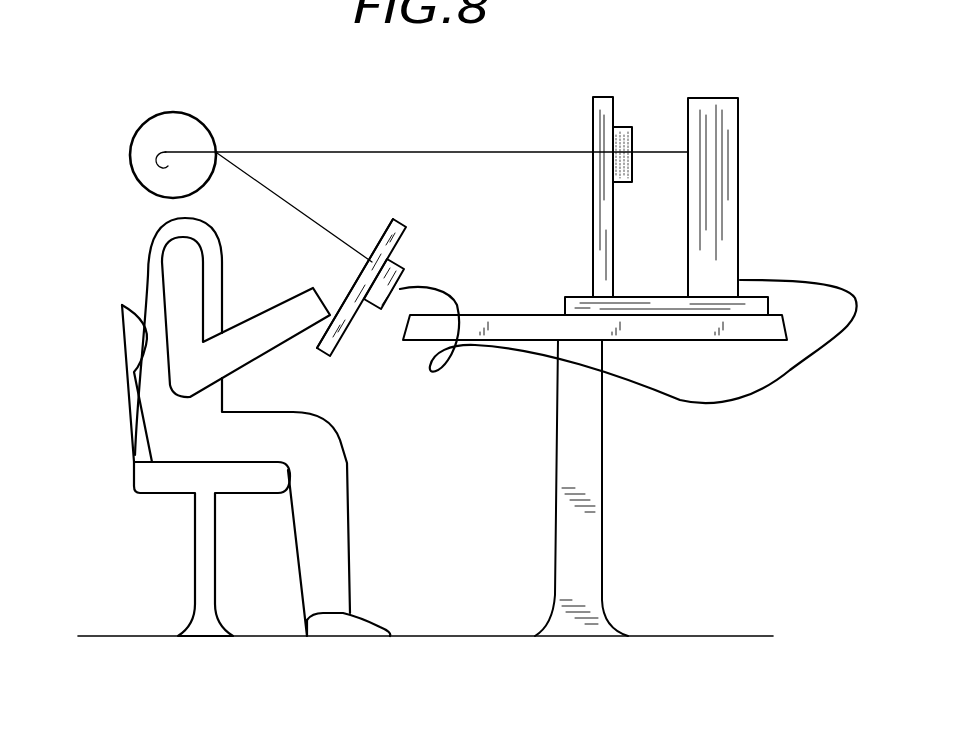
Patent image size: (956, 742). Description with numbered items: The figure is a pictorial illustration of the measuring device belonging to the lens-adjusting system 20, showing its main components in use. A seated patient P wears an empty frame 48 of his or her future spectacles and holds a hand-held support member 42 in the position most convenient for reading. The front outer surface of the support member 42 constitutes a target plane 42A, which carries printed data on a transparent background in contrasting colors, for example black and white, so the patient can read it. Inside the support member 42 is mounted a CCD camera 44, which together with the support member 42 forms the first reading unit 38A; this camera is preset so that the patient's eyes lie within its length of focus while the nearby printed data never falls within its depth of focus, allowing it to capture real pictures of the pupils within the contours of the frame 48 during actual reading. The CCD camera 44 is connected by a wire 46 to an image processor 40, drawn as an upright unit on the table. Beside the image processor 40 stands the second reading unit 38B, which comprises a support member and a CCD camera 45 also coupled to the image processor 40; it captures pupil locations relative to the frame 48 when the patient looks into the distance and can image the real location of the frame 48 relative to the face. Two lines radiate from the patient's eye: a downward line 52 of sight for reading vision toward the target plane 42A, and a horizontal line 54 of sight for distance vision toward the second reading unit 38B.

The patient P is at (85, 209).
The system 20 is at (762, 89).
The first reading unit 38A is at (365, 225).
The second reading unit 38B is at (600, 98).
The image processor 40 is at (738, 202).
The support member 42 is at (405, 224).
The target plane 42A is at (368, 253).
The CCD camera 44 is at (380, 318).
The CCD camera 45 is at (632, 130).
The wire 46 is at (757, 398).
The empty frame 48 is at (217, 143).
The line of sight for 'reading' vision 52 is at (289, 205).
The line of sight for 'distance' vision 54 is at (440, 150).